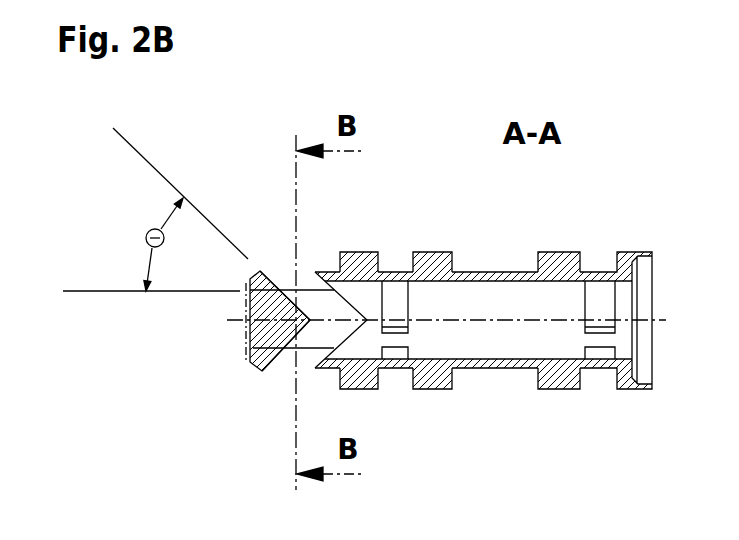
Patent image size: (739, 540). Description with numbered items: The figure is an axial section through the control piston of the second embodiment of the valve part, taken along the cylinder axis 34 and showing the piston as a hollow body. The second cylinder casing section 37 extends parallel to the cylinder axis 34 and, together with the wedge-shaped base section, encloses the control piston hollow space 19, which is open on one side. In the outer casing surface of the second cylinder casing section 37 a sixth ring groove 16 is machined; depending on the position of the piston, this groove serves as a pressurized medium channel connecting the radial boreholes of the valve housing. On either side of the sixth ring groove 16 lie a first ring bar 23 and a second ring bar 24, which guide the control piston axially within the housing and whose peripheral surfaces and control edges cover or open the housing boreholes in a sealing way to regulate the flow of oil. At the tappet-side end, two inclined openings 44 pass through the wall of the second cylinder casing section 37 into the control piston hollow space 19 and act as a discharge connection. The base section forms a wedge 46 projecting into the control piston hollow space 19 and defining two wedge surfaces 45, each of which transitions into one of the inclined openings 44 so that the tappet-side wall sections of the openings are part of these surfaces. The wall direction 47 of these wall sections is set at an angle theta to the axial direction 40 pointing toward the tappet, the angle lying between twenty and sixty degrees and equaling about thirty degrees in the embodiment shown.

The sixth ring groove 16 is at (483, 324).
The control piston hollow space 19 is at (563, 265).
The first ring bar 23 is at (560, 392).
The second ring bar 24 is at (437, 392).
The cylinder axis 34 is at (498, 330).
The second cylinder casing section 37 is at (432, 262).
The axial direction 40 is at (86, 300).
The inclined openings 44 is at (304, 279).
The wedge surfaces 45 is at (280, 286).
The wedge 46 is at (252, 350).
The wall direction 47 is at (150, 162).